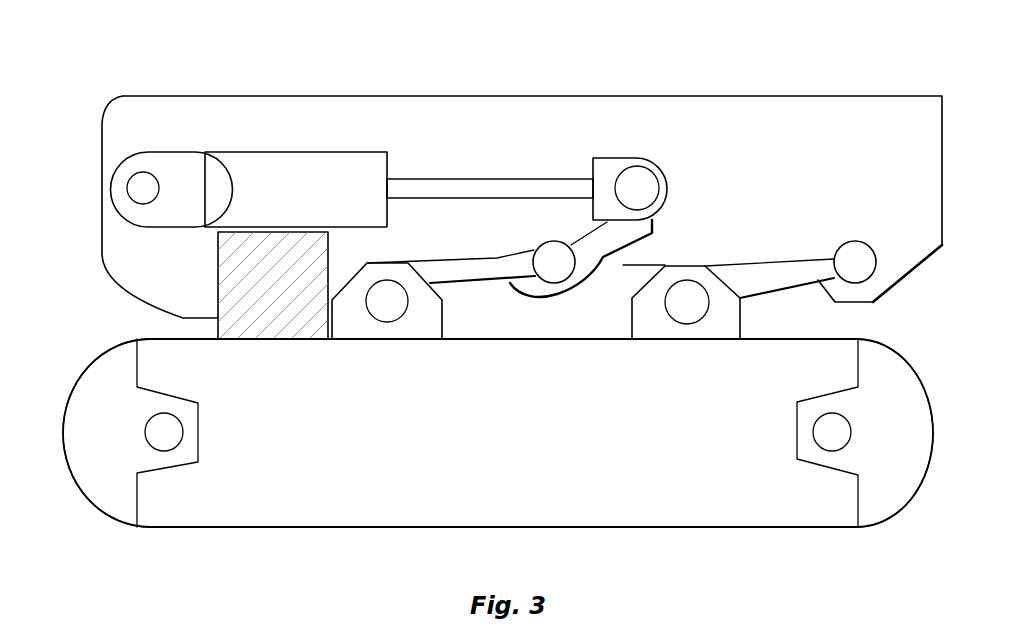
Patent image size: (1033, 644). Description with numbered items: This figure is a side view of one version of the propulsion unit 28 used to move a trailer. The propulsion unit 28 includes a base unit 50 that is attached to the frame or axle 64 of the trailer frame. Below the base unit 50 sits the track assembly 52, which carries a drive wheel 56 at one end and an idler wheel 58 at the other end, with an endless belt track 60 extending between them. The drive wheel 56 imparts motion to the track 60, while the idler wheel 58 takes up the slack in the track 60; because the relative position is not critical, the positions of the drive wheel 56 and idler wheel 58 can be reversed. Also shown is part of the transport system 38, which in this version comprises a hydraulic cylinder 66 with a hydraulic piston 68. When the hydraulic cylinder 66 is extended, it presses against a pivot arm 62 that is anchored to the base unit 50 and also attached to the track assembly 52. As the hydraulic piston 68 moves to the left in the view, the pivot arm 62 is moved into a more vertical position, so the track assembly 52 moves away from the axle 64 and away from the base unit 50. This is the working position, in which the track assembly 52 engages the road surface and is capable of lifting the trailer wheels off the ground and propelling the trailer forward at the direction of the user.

The propulsion unit 28 is at (340, 64).
The transport system 38 is at (442, 129).
The base unit 50 is at (740, 158).
The track assembly 52 is at (496, 382).
The drive wheel 56 is at (108, 378).
The idler wheel 58 is at (895, 510).
The track 60 is at (250, 528).
The pivot arm 62 is at (637, 230).
The axle 64 is at (290, 322).
The hydraulic cylinder 66 is at (258, 173).
The hydraulic piston 68 is at (522, 177).